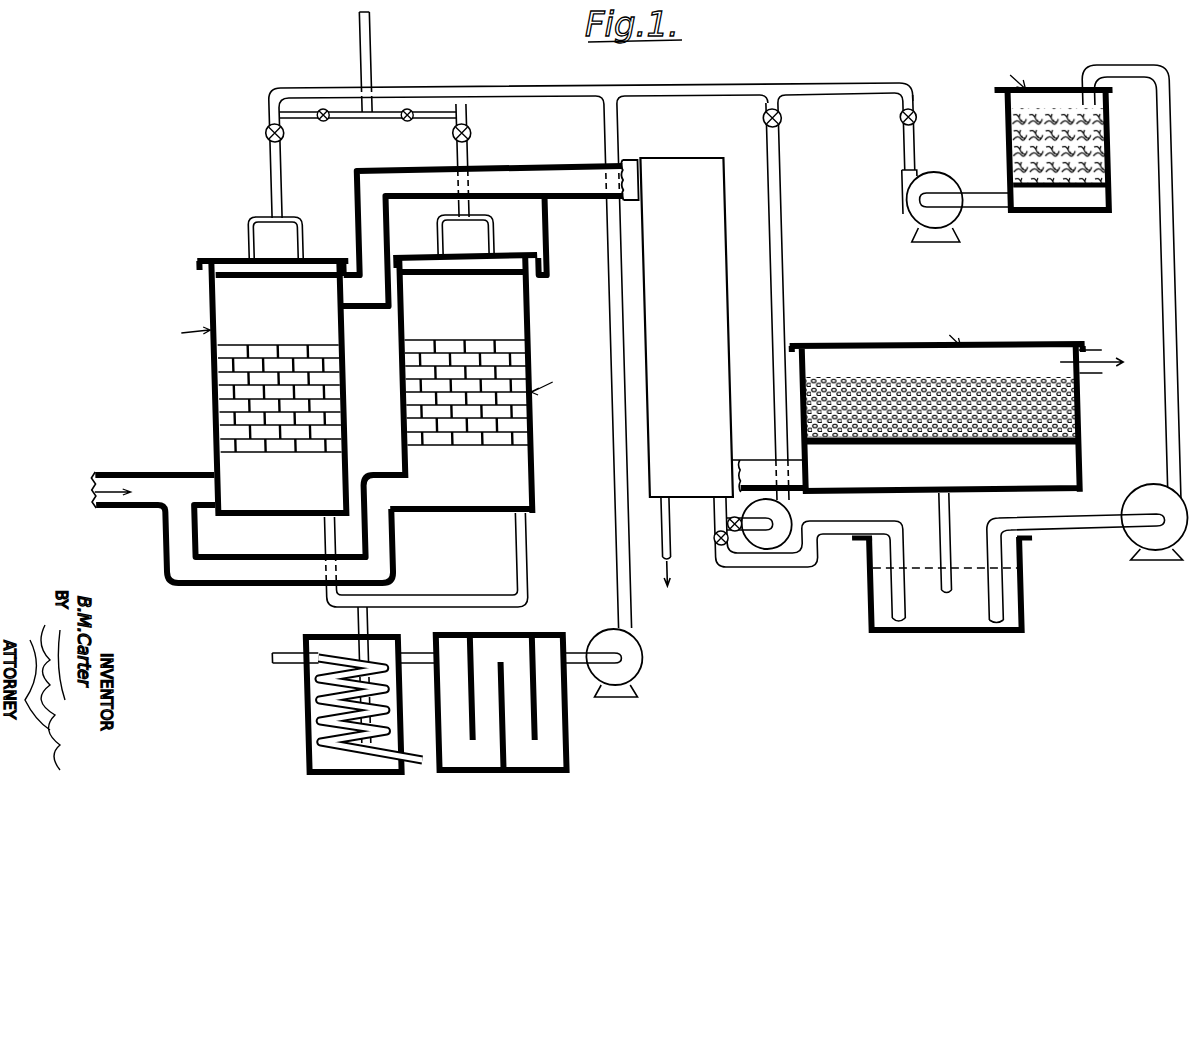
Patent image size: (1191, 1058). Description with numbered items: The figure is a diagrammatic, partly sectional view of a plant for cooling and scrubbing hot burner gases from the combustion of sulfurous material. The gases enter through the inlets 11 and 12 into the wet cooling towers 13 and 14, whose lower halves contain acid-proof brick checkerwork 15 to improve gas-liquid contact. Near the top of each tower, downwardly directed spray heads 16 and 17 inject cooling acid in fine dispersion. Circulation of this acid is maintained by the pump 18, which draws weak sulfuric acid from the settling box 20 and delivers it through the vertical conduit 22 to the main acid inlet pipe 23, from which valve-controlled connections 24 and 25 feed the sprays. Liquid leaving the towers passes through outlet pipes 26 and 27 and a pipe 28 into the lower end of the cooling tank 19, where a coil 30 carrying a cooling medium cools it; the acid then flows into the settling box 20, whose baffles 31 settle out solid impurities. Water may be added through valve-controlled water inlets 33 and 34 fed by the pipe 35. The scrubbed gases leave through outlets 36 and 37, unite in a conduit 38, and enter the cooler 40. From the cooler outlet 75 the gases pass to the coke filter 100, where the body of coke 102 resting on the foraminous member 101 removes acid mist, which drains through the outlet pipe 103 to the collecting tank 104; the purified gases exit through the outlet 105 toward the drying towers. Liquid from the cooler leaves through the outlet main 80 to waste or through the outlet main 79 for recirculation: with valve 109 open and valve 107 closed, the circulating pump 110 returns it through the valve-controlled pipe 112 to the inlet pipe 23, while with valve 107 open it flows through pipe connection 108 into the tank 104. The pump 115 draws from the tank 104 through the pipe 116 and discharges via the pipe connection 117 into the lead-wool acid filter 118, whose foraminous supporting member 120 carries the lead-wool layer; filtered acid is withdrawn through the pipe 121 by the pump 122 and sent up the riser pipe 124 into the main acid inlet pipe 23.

The inlet 11 is at (114, 497).
The inlet 12 is at (216, 575).
The wet cooling tower 13 is at (203, 383).
The wet cooling tower 14 is at (522, 452).
The checkerwork 15 is at (255, 450).
The spray head 16 is at (257, 275).
The spray head 17 is at (454, 275).
The pump 18 is at (624, 657).
The cooling tank 19 is at (286, 697).
The settling box 20 is at (548, 722).
The vertical conduit 22 is at (612, 128).
The main acid inlet pipe 23 is at (540, 88).
The valve-controlled connection 24 is at (276, 165).
The valve-controlled connection 25 is at (461, 148).
The outlet pipe 26 is at (308, 530).
The outlet pipe 27 is at (512, 548).
The pipe 28 is at (341, 618).
The coil 30 is at (260, 660).
The baffles 31 is at (508, 654).
The valve-controlled water inlet 33 is at (318, 118).
The valve-controlled water inlet 34 is at (444, 118).
The pipe 35 is at (370, 48).
The outlet 36 is at (352, 215).
The outlet 37 is at (537, 222).
The conduit 38 is at (630, 165).
The cooler 40 is at (722, 302).
The cooler outlet 75 is at (744, 460).
The outlet main 79 is at (703, 500).
The outlet main 80 is at (647, 533).
The coke filter 100 is at (977, 341).
The foraminous member 101 is at (936, 441).
The coke bed 102 is at (829, 377).
The outlet pipe 103 is at (936, 506).
The collecting tank 104 is at (1007, 592).
The outlet 105 is at (1075, 345).
The valve 107 is at (699, 540).
The pipe connection 108 is at (757, 564).
The valve 109 is at (723, 517).
The circulating pump 110 is at (765, 518).
The valve-controlled pipe 112 is at (775, 167).
The pump 115 is at (1126, 495).
The pipe 116 is at (1063, 528).
The pipe connection 117 is at (1154, 272).
The lead-wool acid filter 118 is at (1103, 150).
The foraminous supporting member 120 is at (1063, 190).
The pipe 121 is at (979, 210).
The pump 122 is at (902, 205).
The riser pipe 124 is at (910, 138).